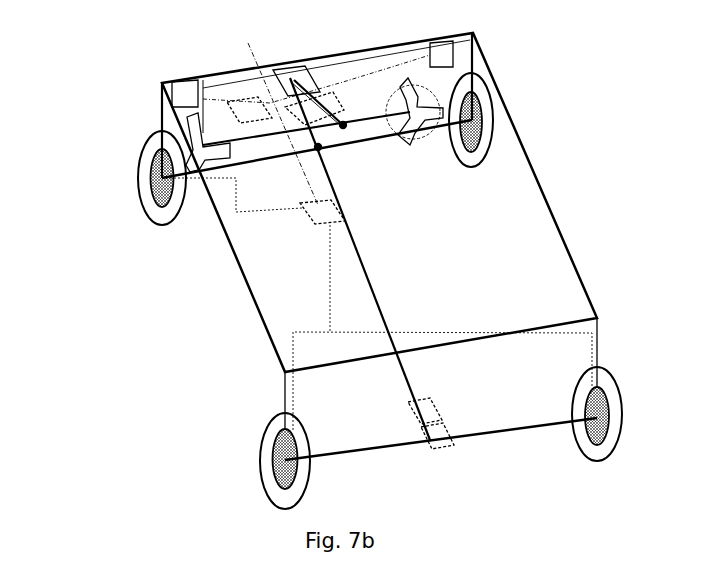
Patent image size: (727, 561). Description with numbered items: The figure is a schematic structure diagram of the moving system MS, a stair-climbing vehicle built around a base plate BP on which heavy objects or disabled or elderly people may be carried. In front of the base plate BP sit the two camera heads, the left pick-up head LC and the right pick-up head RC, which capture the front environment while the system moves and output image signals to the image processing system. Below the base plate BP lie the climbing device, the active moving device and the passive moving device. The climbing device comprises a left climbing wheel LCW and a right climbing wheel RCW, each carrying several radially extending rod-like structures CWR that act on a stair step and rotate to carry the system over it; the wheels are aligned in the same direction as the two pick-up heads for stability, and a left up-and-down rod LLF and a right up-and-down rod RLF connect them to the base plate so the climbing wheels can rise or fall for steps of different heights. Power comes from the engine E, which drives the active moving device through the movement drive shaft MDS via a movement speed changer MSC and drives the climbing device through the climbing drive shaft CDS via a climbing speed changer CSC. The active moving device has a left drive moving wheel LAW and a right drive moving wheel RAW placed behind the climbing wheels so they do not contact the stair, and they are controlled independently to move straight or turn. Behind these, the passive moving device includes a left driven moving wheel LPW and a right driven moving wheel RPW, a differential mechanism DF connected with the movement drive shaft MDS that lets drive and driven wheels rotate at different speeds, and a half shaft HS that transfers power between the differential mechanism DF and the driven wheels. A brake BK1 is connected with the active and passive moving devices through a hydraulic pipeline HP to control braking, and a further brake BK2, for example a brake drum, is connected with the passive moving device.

The moving system MS is at (53, 26).
The movement speed changer MSC is at (267, 109).
The engine E is at (295, 70).
The climbing speed changer CSC is at (340, 97).
The right pick-up head RC is at (455, 52).
The right up-and-down rod RLF is at (503, 102).
The right climbing wheel RCW is at (532, 120).
The rod-like structures CWR is at (496, 112).
The right drive moving wheel RAW is at (536, 129).
The climbing drive shaft CDS is at (450, 140).
The base plate BP is at (560, 223).
The movement drive shaft MDS is at (363, 262).
The left pick-up head LC is at (187, 93).
The left up-and-down rod LLF is at (196, 116).
The left climbing wheel LCW is at (180, 153).
The left drive moving wheel LAW is at (153, 210).
The brake BK1 is at (313, 223).
The hydraulic pipeline HP is at (330, 315).
The brake BK2 is at (273, 442).
The left driven moving wheel LPW is at (283, 503).
The differential mechanism DF is at (417, 415).
The half shaft HS is at (430, 452).
The right driven moving wheel RPW is at (593, 455).